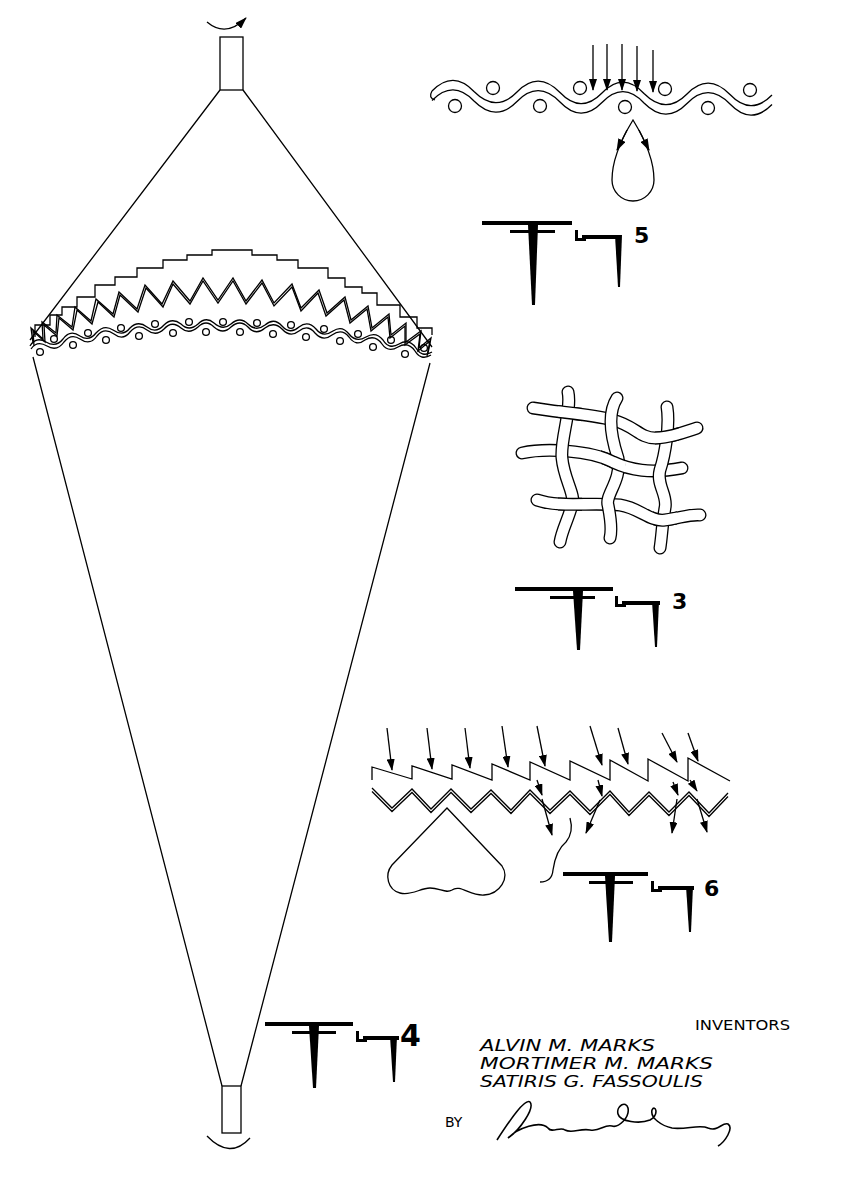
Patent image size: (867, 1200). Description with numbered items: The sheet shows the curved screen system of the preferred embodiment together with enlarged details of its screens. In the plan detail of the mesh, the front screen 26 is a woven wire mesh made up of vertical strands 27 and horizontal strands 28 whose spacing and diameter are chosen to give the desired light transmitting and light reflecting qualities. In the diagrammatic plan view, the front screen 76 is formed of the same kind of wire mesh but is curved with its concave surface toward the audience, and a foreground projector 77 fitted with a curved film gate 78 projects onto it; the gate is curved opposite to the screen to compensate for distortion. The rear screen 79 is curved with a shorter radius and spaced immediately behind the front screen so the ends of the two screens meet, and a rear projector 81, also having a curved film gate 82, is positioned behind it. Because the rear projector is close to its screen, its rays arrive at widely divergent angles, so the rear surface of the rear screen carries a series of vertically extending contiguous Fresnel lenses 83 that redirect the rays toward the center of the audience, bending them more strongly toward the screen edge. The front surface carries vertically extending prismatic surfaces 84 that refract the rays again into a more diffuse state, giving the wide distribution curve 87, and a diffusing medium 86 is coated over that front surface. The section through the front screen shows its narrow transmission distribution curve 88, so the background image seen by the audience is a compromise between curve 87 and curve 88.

In FIG. 3, the front screen 26 is at (530, 406).
In FIG. 3, the vertical strands 27 is at (626, 398).
In FIG. 3, the horizontal strands 28 is at (537, 453).
In FIG. 4, the front screen 76 is at (147, 335).
In FIG. 5, the front screen 76 is at (772, 101).
In FIG. 4, the foreground projector 77 is at (222, 1104).
In FIG. 4, the curved film gate 78 is at (250, 1138).
In FIG. 4, the rear screen 79 is at (173, 280).
In FIG. 6, the rear screen 79 is at (736, 792).
In FIG. 4, the rear projector 81 is at (237, 64).
In FIG. 4, the curved film gate 82 is at (228, 30).
In FIG. 4, the Fresnel lenses 83 is at (234, 253).
In FIG. 6, the Fresnel lenses 83 is at (718, 772).
In FIG. 6, the prismatic surfaces 84 is at (622, 800).
In FIG. 6, the diffusing medium 86 is at (645, 800).
In FIG. 6, the distribution curve 87 is at (503, 864).
In FIG. 5, the distribution curve 88 is at (665, 162).